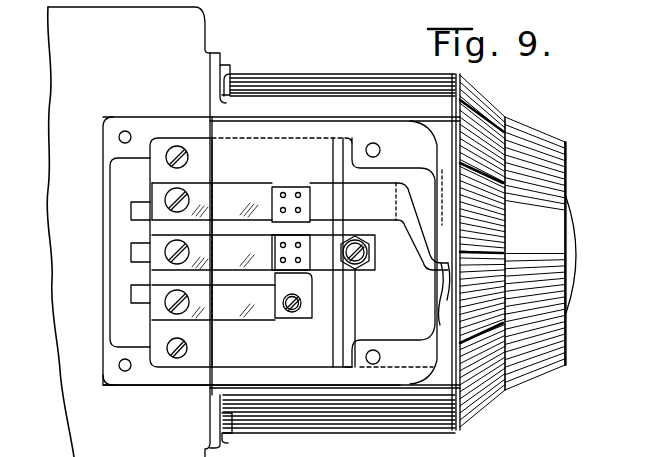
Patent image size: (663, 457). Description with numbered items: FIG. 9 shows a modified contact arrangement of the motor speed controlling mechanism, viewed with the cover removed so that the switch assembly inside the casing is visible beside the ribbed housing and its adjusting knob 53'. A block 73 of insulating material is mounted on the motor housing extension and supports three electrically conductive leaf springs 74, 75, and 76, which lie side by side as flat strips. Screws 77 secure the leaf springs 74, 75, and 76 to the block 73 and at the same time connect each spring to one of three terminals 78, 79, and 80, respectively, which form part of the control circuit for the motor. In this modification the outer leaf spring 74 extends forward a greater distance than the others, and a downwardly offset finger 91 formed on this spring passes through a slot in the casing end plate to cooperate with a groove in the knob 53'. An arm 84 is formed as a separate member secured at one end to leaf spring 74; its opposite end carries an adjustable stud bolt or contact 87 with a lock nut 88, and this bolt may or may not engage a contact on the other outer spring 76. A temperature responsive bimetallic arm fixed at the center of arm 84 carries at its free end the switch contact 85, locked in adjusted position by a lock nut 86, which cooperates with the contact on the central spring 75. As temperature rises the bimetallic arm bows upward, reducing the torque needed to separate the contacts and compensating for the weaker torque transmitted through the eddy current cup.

The knob 53' is at (585, 253).
The block of insulating material 73 is at (152, 333).
The leaf spring 74 is at (246, 191).
The leaf spring 75 is at (238, 214).
The leaf spring 76 is at (220, 290).
The screws 77 is at (204, 182).
The terminal 78 is at (146, 205).
The terminal 79 is at (146, 253).
The terminal 80 is at (146, 295).
The arm 84 is at (276, 232).
The switch contact 85 is at (360, 250).
The lock nut 86 is at (357, 268).
The adjustable stud bolt or contact 87 is at (298, 310).
The lock nut 88 is at (297, 318).
The finger 91 is at (444, 262).